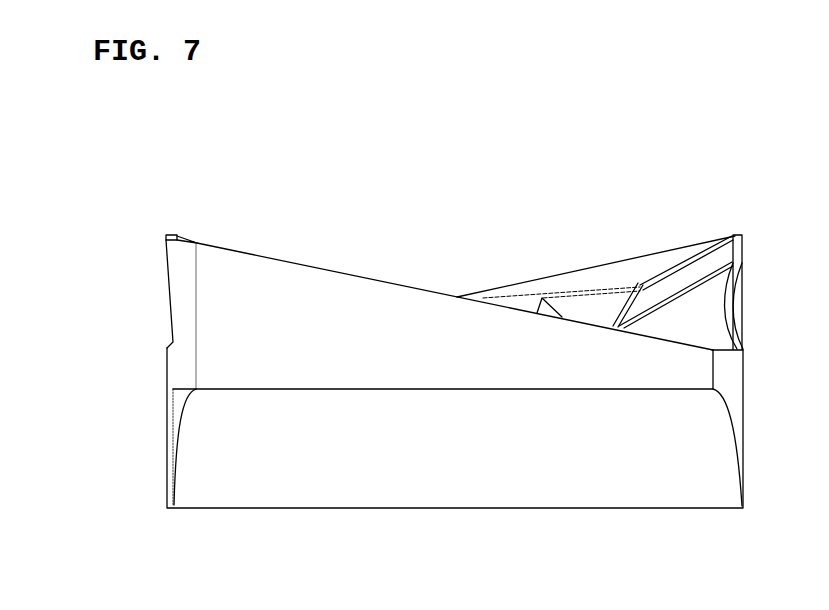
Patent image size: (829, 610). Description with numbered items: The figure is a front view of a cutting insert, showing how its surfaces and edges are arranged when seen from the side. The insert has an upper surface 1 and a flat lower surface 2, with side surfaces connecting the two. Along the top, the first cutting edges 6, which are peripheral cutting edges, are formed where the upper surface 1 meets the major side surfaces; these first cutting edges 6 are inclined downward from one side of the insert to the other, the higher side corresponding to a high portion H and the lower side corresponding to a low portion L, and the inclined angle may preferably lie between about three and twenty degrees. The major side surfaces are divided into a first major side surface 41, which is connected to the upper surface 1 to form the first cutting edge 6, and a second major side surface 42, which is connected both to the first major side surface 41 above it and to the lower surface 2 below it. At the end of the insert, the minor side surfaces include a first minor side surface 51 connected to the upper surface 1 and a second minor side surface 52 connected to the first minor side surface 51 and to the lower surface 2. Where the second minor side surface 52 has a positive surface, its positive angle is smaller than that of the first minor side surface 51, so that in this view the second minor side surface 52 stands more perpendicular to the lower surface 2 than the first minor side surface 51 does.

The upper surface 1 is at (344, 258).
The lower surface 2 is at (363, 521).
The first cutting edge 6 is at (267, 257).
The first major side surface 41 is at (396, 310).
The second major side surface 42 is at (527, 483).
The first minor side surface 51 is at (167, 287).
The second minor side surface 52 is at (178, 407).
The high portion H is at (166, 238).
The low portion L is at (745, 349).